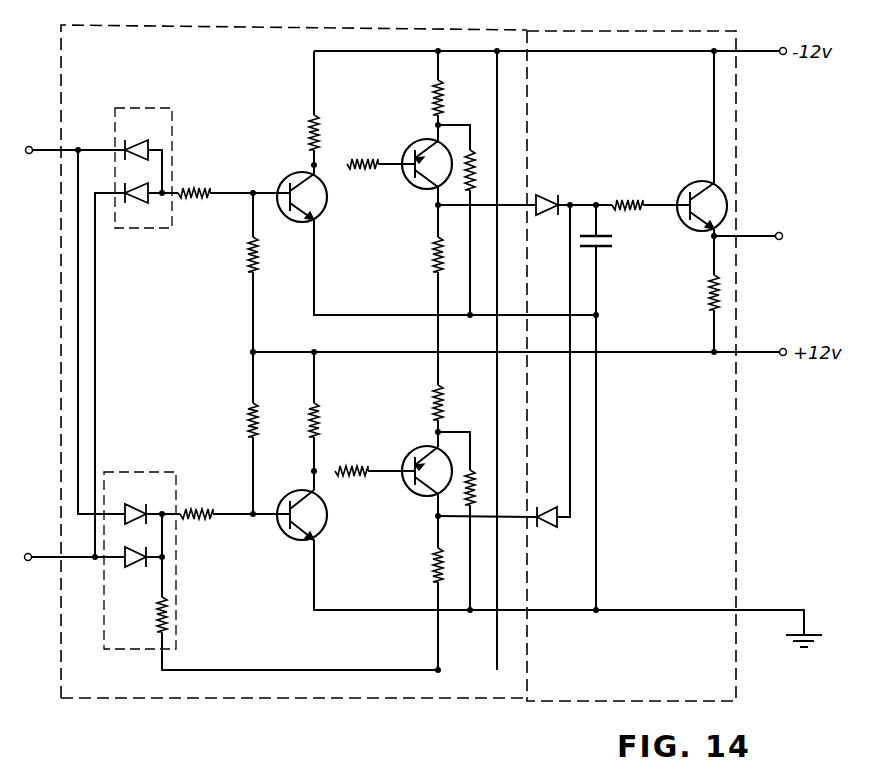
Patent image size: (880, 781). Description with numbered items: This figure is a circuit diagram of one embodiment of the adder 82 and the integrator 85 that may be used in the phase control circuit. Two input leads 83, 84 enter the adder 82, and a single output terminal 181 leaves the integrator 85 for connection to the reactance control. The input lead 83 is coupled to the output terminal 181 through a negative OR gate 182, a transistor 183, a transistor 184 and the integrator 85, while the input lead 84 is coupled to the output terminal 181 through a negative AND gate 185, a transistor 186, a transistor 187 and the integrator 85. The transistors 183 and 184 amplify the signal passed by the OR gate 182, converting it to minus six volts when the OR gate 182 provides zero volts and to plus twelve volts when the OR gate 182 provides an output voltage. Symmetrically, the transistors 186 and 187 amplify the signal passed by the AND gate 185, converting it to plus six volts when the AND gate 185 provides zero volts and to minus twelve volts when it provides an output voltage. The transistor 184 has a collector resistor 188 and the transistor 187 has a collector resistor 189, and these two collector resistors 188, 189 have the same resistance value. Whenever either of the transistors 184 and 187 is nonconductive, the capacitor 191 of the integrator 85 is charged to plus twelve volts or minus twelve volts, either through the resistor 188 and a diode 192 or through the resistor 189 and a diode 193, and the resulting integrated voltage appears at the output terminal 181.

The adder 82 is at (158, 37).
The integrator 85 is at (560, 42).
The input lead 83 is at (46, 150).
The input lead 84 is at (26, 563).
The negative OR gate 182 is at (150, 134).
The negative AND gate 185 is at (142, 619).
The transistor 183 is at (321, 210).
The transistor 184 is at (424, 140).
The transistor 186 is at (321, 530).
The transistor 187 is at (421, 446).
The collector resistor 188 is at (425, 247).
The collector resistor 189 is at (425, 552).
The capacitor 191 is at (614, 238).
The diode 192 is at (553, 195).
The diode 193 is at (544, 531).
The output terminal 181 is at (782, 233).